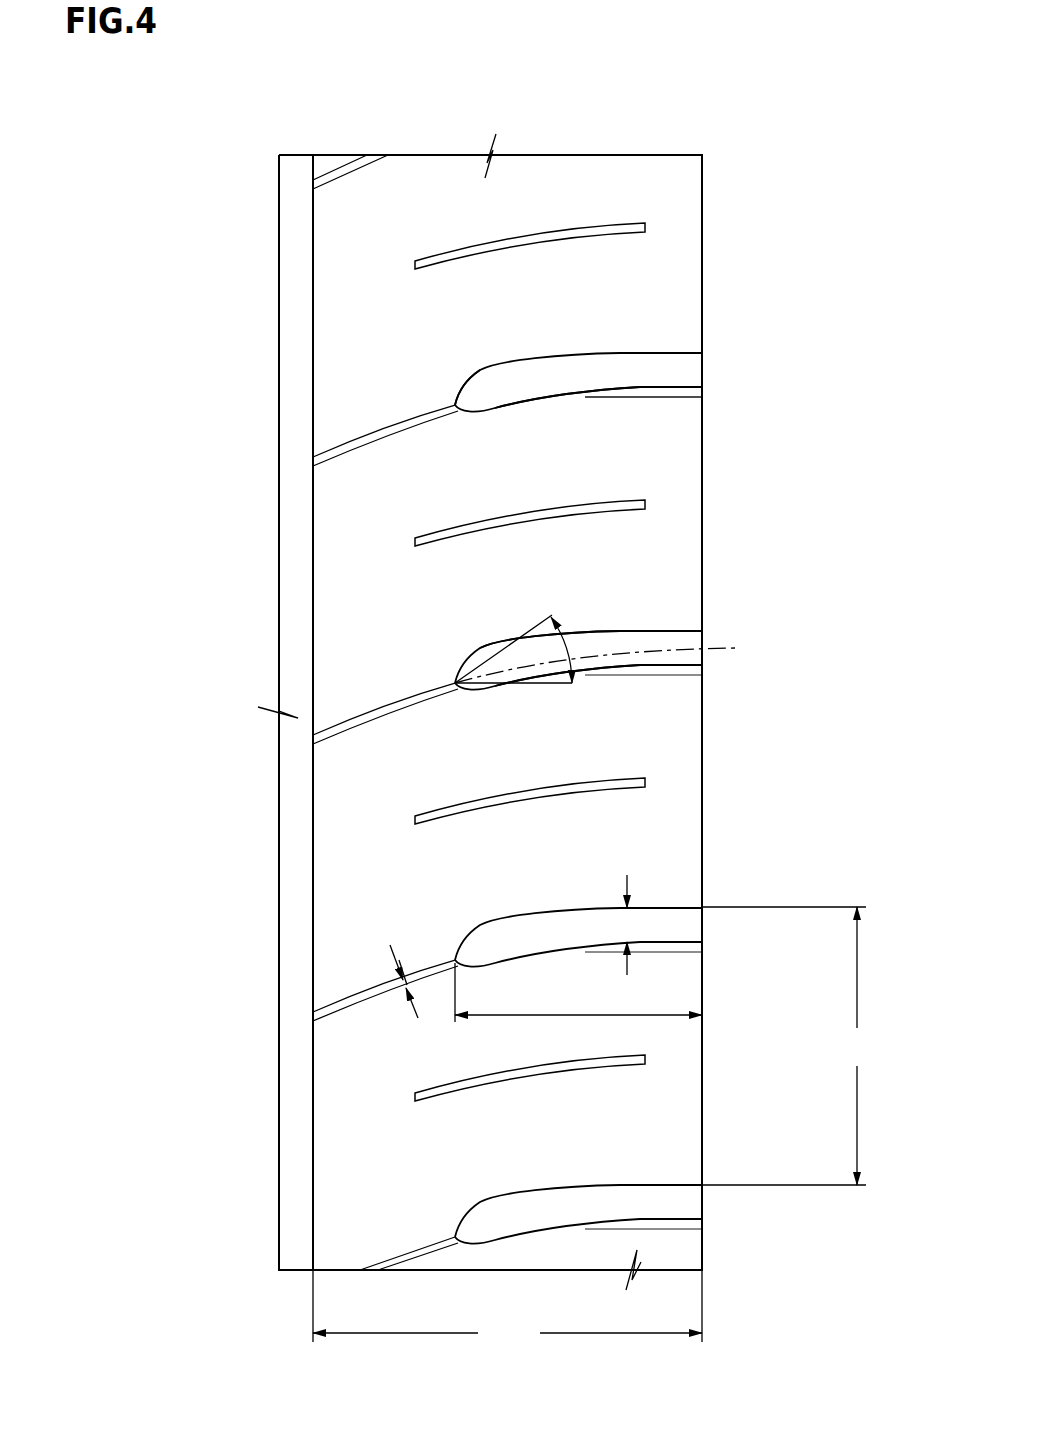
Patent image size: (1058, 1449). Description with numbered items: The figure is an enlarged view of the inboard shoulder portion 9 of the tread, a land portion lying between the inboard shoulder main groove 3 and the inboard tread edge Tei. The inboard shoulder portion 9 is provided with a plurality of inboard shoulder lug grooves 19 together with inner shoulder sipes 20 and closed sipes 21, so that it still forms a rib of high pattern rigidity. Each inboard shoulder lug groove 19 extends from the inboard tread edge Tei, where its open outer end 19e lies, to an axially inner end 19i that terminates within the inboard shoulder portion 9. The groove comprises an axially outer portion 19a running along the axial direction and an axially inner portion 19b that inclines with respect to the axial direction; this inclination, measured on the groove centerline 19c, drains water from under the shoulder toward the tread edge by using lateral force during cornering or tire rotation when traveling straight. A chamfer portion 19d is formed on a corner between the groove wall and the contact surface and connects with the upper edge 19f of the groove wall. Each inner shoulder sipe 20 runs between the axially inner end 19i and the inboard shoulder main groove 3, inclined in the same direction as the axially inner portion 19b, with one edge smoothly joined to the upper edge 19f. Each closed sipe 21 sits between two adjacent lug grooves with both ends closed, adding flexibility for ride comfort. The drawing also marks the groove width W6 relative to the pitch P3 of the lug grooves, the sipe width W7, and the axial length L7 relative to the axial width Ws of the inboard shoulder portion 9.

The inboard shoulder main groove 3 is at (294, 177).
The inboard shoulder portion 9 is at (542, 132).
The inboard tread edge Tei is at (703, 212).
The inboard shoulder lug groove 19 is at (620, 355).
The axially outer portion 19a is at (648, 662).
The axially inner portion 19b is at (512, 670).
The groove centerline 19c is at (633, 647).
The chamfer portion 19d is at (517, 403).
The outer end of lateral groove at tread edge 19e is at (703, 362).
The upper edge 19f is at (567, 392).
The axially inner end 19i is at (453, 402).
The inner shoulder sipe 20 is at (372, 428).
The closed sipe 21 is at (450, 805).
The groove width W6 is at (626, 925).
The sipe width W7 is at (392, 980).
The axial length L7 is at (578, 1008).
The pitch P3 is at (789, 1046).
The axial width Ws is at (507, 1310).